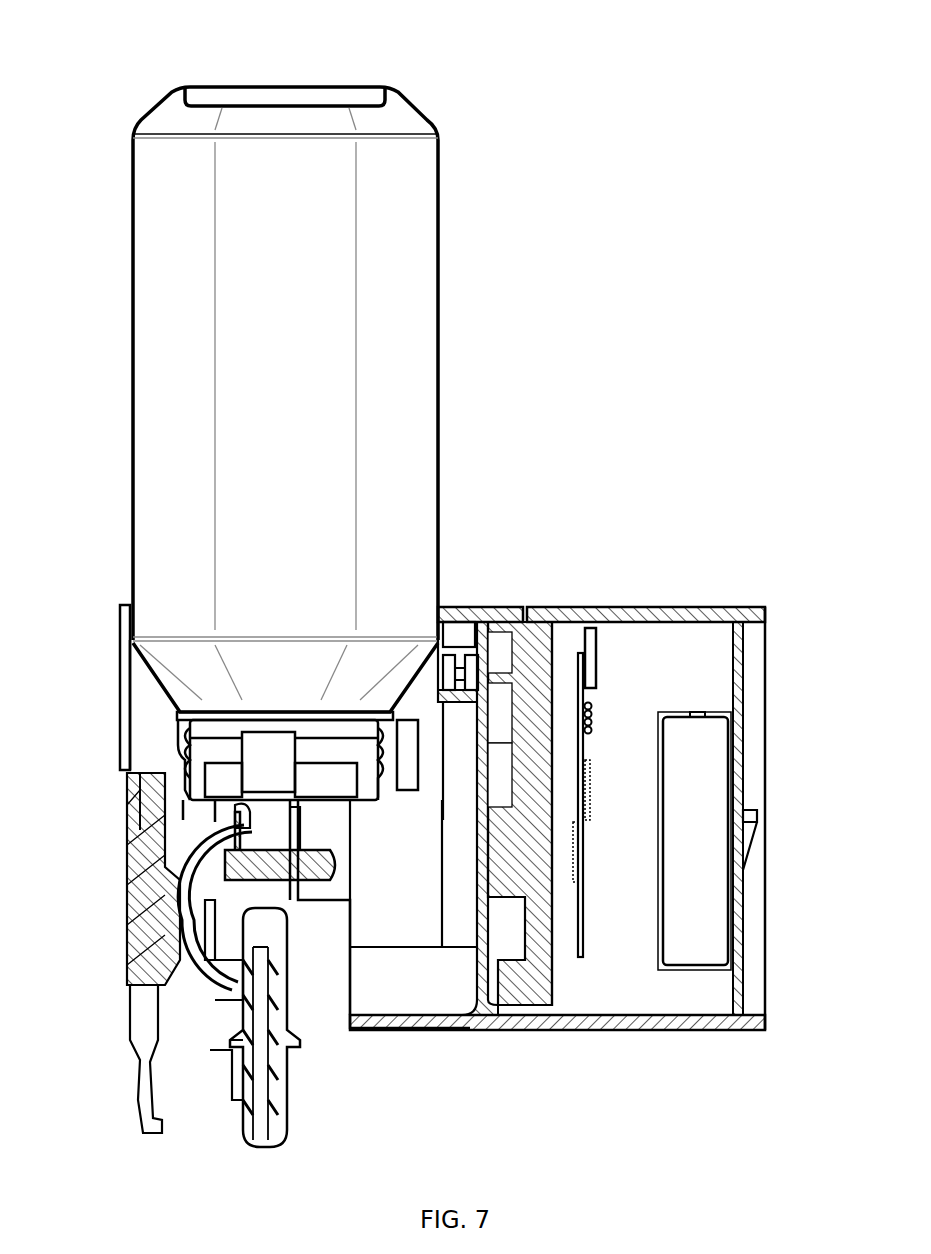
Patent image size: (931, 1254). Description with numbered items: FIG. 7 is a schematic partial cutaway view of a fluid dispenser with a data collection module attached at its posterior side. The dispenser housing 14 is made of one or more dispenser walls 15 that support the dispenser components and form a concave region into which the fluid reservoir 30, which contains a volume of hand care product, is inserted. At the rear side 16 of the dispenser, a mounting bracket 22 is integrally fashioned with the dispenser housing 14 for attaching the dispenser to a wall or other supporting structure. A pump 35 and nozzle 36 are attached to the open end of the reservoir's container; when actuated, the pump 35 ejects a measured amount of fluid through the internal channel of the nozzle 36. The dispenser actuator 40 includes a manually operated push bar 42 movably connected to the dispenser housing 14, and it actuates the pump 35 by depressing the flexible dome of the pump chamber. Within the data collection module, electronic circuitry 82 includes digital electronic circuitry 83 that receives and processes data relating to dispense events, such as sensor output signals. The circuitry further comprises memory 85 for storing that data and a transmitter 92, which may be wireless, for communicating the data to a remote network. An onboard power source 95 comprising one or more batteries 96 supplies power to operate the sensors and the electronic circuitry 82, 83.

The fluid reservoir 30 is at (150, 322).
The dispenser housing 14 is at (120, 672).
The dispenser walls 15 is at (120, 710).
The push bar 42 is at (145, 812).
The dispenser actuator 40 is at (150, 878).
The pump 35 is at (222, 936).
The nozzle 36 is at (292, 1122).
The rear side 16 is at (565, 512).
The mounting bracket 22 is at (465, 612).
The transmitter 92 is at (600, 638).
The digital electronic circuitry 83 is at (588, 703).
The electronic circuitry 82 is at (586, 750).
The memory 85 is at (586, 852).
The onboard power source 95 is at (722, 924).
The batteries 96 is at (706, 776).